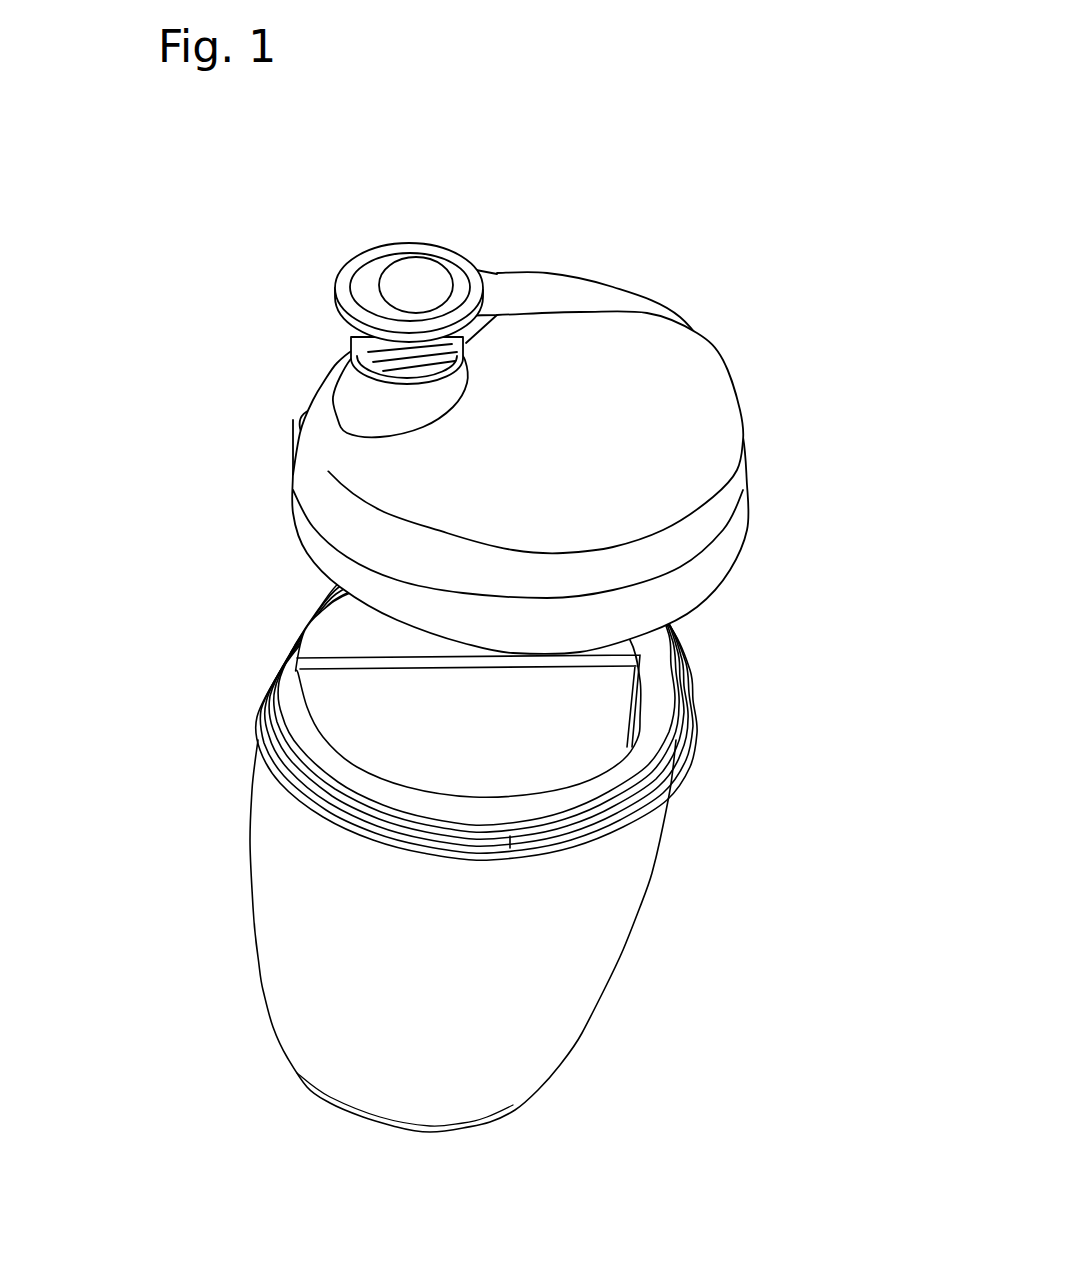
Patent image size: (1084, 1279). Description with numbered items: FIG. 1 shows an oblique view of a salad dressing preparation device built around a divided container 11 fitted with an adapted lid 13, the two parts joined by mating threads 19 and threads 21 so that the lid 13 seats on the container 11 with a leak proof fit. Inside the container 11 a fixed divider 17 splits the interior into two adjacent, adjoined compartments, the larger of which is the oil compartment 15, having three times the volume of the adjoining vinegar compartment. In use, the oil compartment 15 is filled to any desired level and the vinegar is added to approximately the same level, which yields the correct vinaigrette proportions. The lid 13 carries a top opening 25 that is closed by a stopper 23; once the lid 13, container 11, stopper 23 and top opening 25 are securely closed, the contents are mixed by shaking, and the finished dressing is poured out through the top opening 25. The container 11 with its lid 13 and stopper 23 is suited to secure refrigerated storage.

The divided container 11 is at (275, 870).
The lid 13 is at (655, 415).
The oil compartment 15 is at (487, 722).
The fixed divider 17 is at (345, 666).
The threads 19 is at (290, 715).
The threads 21 is at (706, 562).
The stopper 23 is at (345, 265).
The top opening 25 is at (352, 361).